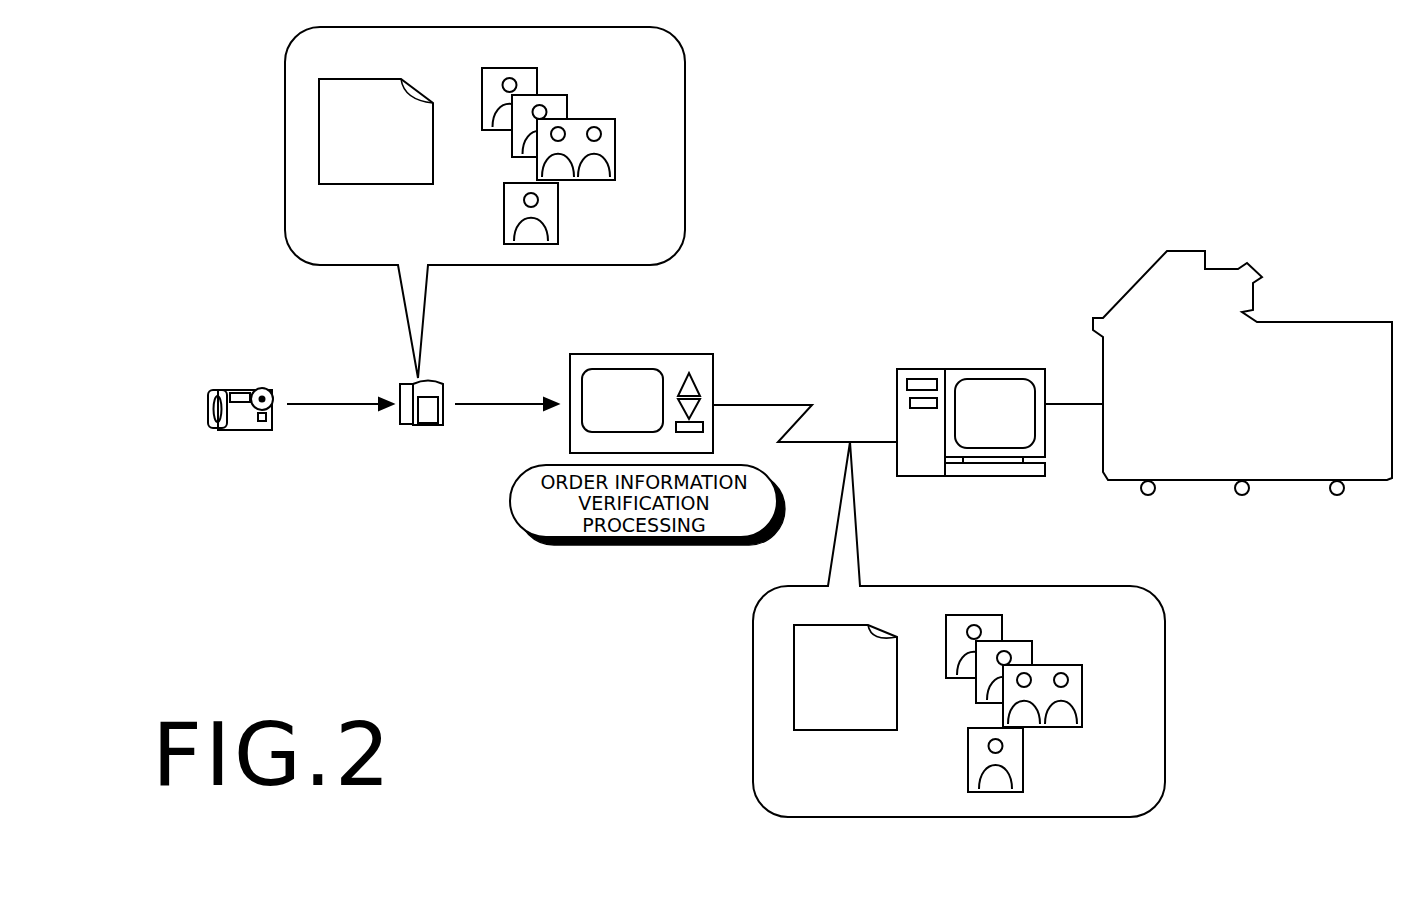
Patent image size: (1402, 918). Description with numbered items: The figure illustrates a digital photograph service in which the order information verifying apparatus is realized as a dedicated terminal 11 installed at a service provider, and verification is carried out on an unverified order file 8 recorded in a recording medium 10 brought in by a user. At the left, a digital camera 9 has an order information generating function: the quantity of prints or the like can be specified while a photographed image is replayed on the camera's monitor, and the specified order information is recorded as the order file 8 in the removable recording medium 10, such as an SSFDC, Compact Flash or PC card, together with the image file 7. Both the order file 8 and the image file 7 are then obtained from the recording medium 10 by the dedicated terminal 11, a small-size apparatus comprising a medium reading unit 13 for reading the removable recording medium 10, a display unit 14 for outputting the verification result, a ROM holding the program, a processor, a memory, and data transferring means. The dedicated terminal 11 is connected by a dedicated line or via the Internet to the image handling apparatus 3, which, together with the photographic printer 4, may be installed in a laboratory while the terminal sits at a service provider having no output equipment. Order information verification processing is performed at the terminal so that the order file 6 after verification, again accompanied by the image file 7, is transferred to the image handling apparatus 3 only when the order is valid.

The image handling apparatus 3 is at (998, 369).
The photographic printer 4 is at (1345, 322).
The order file after verification 6 is at (853, 730).
The image file 7 is at (615, 157).
The unverified order file 8 is at (388, 184).
The digital camera 9 is at (218, 430).
The recording medium 10 is at (427, 425).
The dedicated terminal 11 is at (666, 381).
The medium reading unit 13 is at (703, 428).
The display unit 14 is at (603, 370).